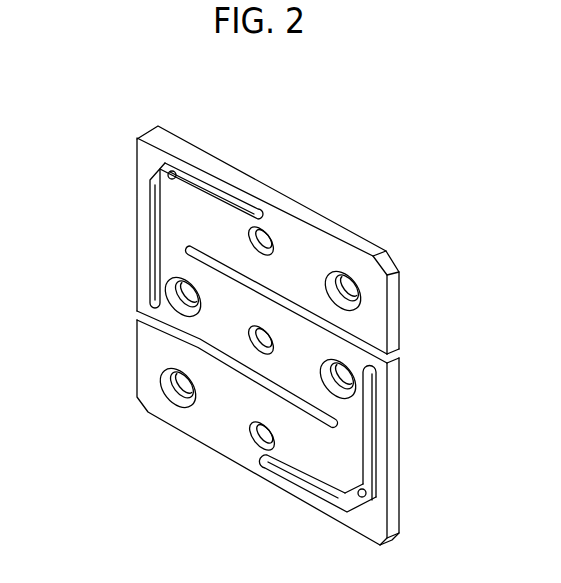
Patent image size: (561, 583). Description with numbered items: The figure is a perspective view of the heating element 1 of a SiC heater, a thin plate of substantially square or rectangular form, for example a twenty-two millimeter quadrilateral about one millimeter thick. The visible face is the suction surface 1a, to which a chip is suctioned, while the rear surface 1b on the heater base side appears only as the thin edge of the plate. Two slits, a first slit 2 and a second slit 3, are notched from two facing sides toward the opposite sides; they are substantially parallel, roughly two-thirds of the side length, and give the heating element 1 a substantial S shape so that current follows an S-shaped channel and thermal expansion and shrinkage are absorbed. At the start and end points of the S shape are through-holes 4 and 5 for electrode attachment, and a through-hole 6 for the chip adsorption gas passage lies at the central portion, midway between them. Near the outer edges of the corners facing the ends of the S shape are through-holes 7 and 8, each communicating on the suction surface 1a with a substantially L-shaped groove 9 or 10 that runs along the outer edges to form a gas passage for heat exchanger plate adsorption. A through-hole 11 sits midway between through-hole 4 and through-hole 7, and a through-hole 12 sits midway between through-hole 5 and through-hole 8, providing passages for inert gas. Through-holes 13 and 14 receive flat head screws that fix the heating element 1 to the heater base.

The heating element 1 is at (345, 137).
The suction surface 1a is at (202, 221).
The rear surface 1b is at (225, 162).
The first slit 2 is at (388, 362).
The second slit 3 is at (143, 314).
The through-hole for electrode attachment 4 is at (350, 286).
The through-hole for electrode attachment 5 is at (176, 392).
The through-hole 6 is at (263, 330).
The through-hole 7 is at (170, 176).
The through-hole 8 is at (362, 494).
The groove 9 is at (158, 232).
The groove 10 is at (368, 440).
The through-hole 11 is at (266, 238).
The through-hole 12 is at (268, 442).
The through-hole 13 is at (178, 296).
The through-hole 14 is at (346, 372).